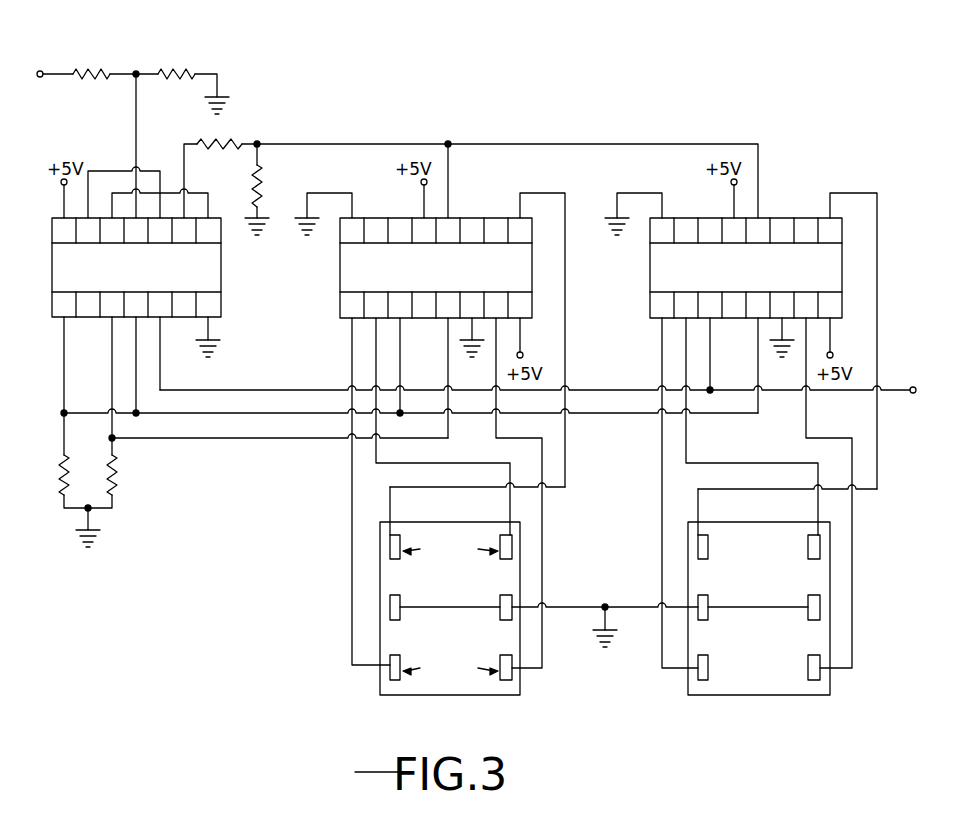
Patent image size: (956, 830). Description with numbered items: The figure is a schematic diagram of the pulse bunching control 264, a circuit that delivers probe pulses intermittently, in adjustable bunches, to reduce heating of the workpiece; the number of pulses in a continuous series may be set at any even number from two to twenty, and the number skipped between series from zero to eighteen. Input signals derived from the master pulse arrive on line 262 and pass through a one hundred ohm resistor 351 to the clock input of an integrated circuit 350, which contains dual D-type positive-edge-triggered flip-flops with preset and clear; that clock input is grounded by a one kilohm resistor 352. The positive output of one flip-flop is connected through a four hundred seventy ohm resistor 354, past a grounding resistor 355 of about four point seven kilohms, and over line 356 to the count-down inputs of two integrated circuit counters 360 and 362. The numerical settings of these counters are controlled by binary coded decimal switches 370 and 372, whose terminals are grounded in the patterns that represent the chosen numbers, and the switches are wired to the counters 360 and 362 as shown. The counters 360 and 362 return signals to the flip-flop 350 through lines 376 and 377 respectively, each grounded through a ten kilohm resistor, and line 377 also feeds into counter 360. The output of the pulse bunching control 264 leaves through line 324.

The line 262 is at (43, 71).
The resistor 351 is at (104, 72).
The resistor 352 is at (205, 53).
The resistor 354 is at (229, 143).
The grounding resistor 355 is at (262, 186).
The line 356 is at (475, 143).
The integrated circuit 350 is at (221, 270).
The integrated circuit counter 360 is at (472, 218).
The integrated circuit counter 362 is at (780, 218).
The binary coded decimal switch 370 is at (512, 581).
The binary coded decimal switch 372 is at (825, 581).
The line 324 is at (230, 390).
The line 376 is at (245, 440).
The line 377 is at (305, 414).
The pulse bunching control 264 is at (283, 537).